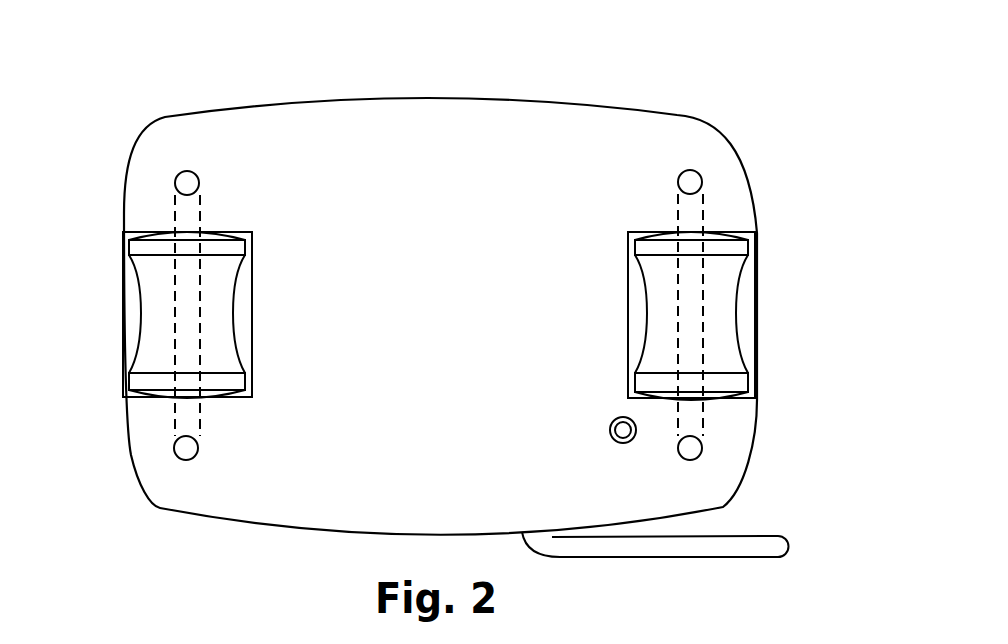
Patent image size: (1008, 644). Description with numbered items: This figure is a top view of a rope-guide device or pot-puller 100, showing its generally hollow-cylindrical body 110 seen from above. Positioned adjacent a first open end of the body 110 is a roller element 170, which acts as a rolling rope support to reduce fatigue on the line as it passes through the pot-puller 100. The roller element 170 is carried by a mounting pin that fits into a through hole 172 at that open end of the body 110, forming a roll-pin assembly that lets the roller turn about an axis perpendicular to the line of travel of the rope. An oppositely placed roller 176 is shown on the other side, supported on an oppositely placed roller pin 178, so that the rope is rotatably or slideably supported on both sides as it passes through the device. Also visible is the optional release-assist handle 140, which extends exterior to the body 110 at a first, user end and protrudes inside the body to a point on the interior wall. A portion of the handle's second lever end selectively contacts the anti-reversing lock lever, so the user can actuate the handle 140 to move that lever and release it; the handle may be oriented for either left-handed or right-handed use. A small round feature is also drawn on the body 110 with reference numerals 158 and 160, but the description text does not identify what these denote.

The pot-puller 100 is at (742, 95).
The body 110 is at (577, 99).
The release-assist handle 140 is at (765, 532).
The button 158 is at (615, 420).
The button center 160 is at (611, 426).
The roller element 170 is at (742, 348).
The through hole 172 is at (700, 170).
The roller 176 is at (135, 348).
The roller pin 178 is at (180, 173).